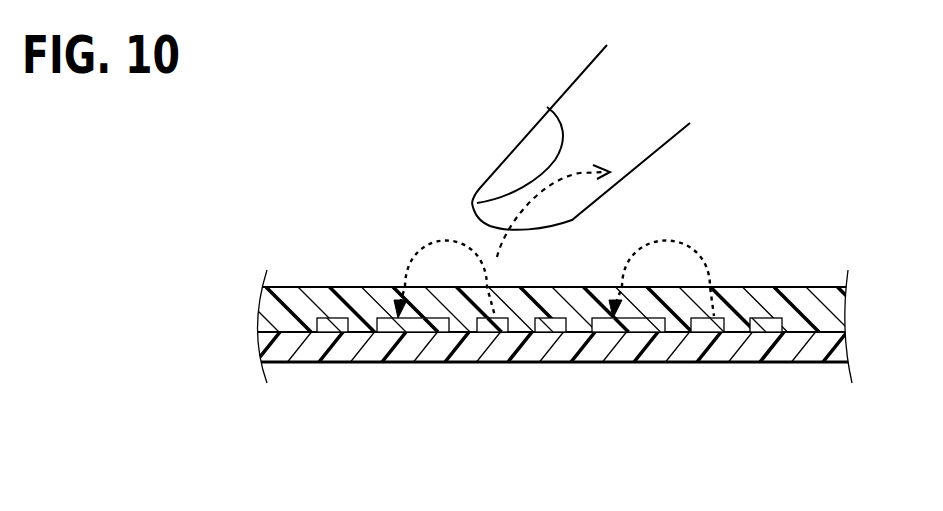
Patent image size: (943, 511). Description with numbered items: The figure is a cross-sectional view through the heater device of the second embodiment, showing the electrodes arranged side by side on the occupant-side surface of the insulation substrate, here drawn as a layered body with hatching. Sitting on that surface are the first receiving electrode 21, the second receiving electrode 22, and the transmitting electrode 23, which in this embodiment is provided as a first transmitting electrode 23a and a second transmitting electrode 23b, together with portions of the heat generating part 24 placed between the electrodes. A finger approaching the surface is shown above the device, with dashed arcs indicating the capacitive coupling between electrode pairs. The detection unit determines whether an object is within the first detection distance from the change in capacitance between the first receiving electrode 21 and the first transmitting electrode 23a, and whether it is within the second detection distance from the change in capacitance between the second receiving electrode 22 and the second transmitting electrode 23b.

The first receiving electrode 21 is at (648, 327).
The second receiving electrode 22 is at (410, 330).
The transmitting electrode 23 is at (602, 406).
The first transmitting electrode 23a is at (705, 388).
The second transmitting electrode 23b is at (493, 327).
The heat generating part 24 is at (332, 327).